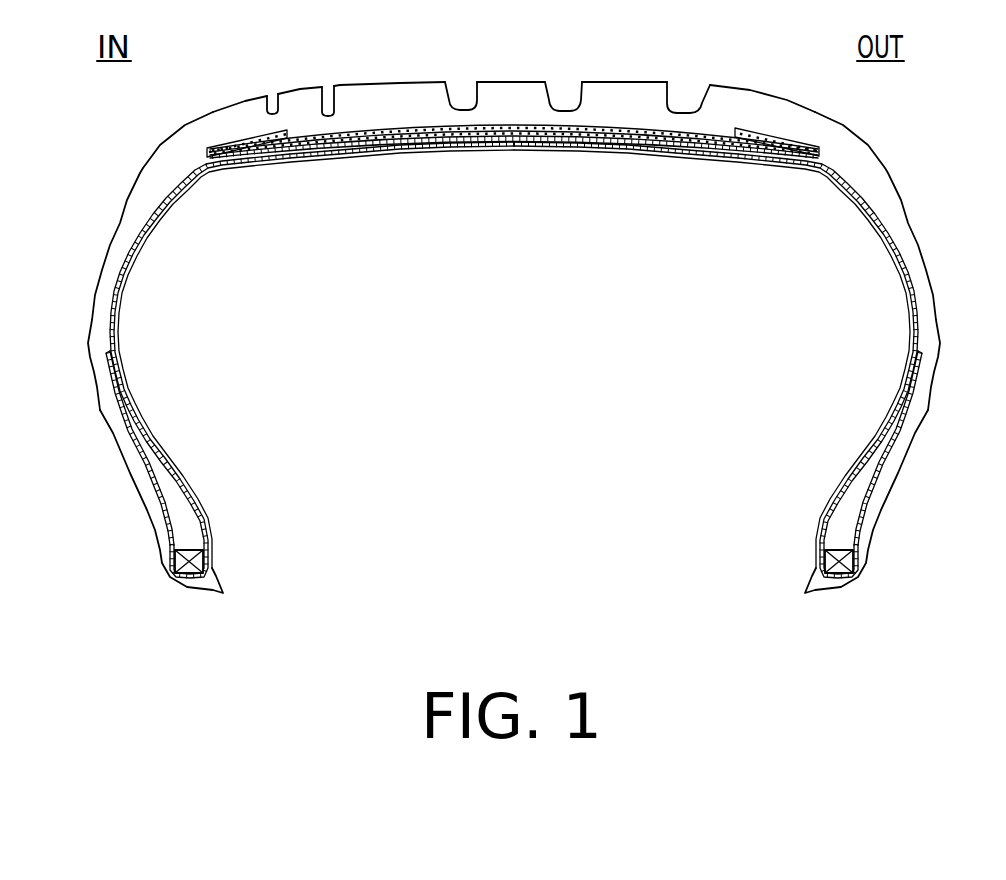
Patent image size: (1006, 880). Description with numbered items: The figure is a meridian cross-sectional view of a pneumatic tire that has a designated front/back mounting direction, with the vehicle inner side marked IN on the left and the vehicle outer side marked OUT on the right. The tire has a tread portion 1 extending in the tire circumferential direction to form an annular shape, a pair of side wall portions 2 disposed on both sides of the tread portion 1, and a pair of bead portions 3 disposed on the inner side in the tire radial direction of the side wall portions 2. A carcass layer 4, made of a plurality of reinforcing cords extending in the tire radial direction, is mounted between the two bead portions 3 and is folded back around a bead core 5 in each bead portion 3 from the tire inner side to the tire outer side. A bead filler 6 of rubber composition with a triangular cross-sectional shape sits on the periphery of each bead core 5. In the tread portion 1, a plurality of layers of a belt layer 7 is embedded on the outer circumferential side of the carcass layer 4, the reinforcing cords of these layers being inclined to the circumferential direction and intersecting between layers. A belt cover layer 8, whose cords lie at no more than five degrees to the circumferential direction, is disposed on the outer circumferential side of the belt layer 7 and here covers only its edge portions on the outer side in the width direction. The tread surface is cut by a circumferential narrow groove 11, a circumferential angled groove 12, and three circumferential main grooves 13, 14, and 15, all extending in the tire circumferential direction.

The tread portion 1 is at (631, 78).
The side wall portion 2 is at (94, 395).
The bead portion 3 is at (154, 553).
The carcass layer 4 is at (908, 257).
The bead core 5 is at (199, 560).
The bead filler 6 is at (178, 510).
The belt layer 7 is at (627, 145).
The belt cover layer 8 is at (214, 150).
The circumferential narrow groove 11 is at (271, 90).
The circumferential angled groove 12 is at (323, 88).
The circumferential main groove 13 is at (448, 90).
The circumferential main groove 14 is at (551, 90).
The circumferential main groove 15 is at (700, 90).